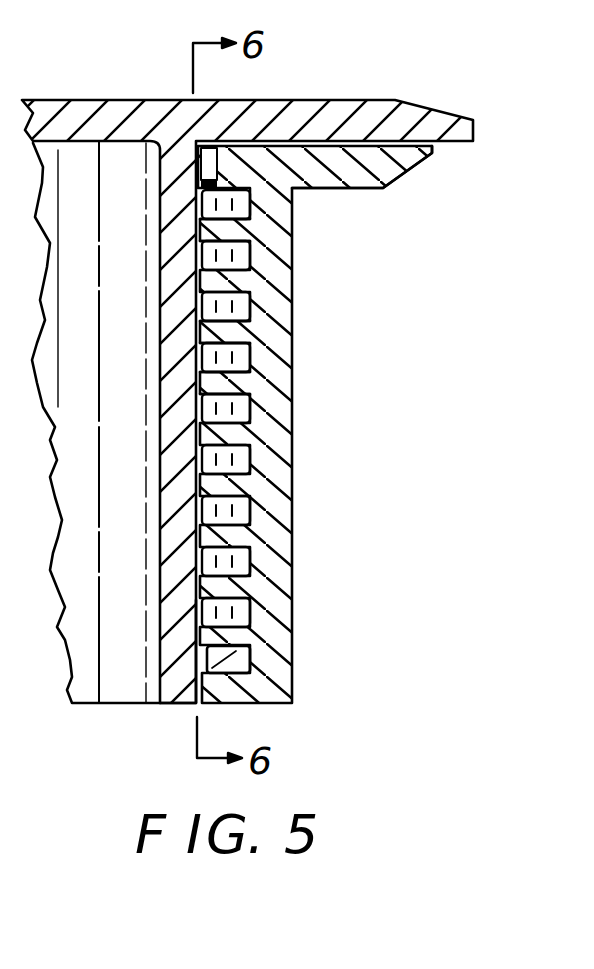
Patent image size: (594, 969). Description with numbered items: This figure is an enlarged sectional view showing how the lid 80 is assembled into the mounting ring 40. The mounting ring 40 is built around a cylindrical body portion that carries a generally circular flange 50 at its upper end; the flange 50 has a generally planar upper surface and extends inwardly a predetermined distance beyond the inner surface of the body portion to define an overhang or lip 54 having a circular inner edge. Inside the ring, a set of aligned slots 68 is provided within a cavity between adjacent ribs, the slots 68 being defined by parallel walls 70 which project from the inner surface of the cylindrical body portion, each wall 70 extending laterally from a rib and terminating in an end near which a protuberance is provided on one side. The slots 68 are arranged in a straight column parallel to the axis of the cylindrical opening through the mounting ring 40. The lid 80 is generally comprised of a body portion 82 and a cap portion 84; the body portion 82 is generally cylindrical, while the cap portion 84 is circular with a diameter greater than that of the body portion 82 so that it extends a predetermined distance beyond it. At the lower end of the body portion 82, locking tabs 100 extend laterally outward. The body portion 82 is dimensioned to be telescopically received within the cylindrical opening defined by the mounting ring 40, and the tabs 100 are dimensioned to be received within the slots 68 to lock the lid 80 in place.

The mounting ring 40 is at (362, 410).
The flange 50 is at (433, 152).
The lip 54 is at (218, 176).
The slots 68 is at (237, 207).
The walls 70 is at (230, 332).
The lid 80 is at (454, 88).
The body portion 82 is at (182, 692).
The cap portion 84 is at (110, 117).
The locking tabs 100 is at (253, 653).